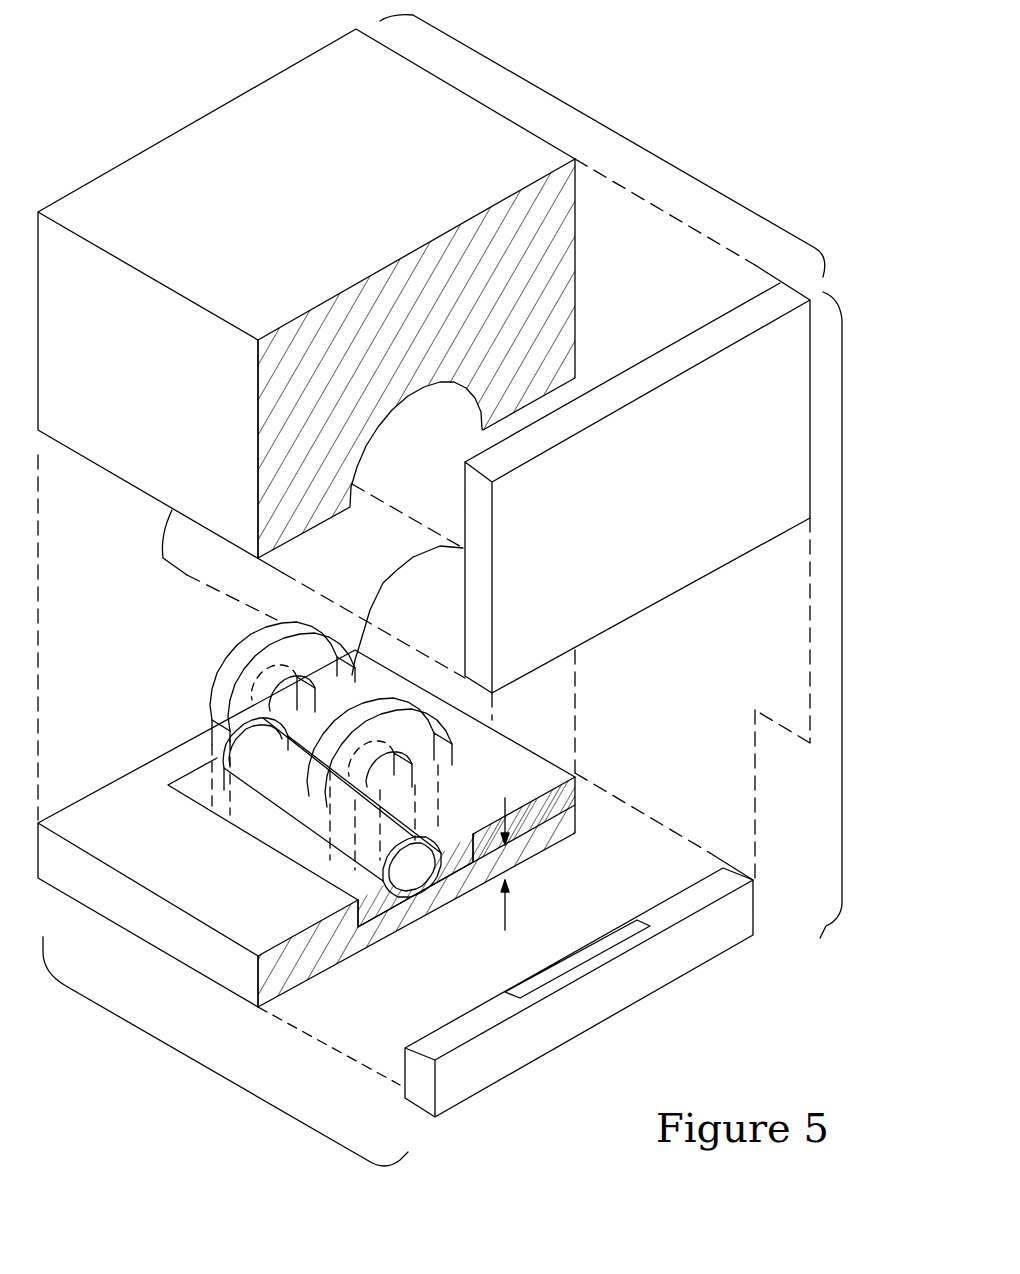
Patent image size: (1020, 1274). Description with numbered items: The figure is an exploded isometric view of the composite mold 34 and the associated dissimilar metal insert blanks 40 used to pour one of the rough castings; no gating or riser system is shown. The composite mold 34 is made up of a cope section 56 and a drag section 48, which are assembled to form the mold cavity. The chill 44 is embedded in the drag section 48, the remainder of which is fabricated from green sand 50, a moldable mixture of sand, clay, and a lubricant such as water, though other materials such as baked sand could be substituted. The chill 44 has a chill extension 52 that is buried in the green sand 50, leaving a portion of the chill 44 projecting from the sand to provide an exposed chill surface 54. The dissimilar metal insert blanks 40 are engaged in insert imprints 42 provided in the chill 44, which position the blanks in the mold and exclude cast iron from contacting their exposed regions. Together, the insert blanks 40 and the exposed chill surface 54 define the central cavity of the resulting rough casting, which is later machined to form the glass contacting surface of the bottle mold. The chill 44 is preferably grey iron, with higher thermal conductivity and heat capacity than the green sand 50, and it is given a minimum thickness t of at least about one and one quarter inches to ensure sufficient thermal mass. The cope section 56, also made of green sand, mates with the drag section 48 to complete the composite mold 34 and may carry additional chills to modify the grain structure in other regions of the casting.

The cope section 56 is at (625, 137).
The composite mold 34 is at (845, 615).
The dissimilar metal insert blanks 40 is at (203, 668).
The insert imprints 42 is at (250, 778).
The chill 44 is at (253, 835).
The green sand 50 is at (560, 838).
The chill extension 52 is at (312, 858).
The exposed chill surface 54 is at (414, 905).
The drag section 48 is at (220, 1068).